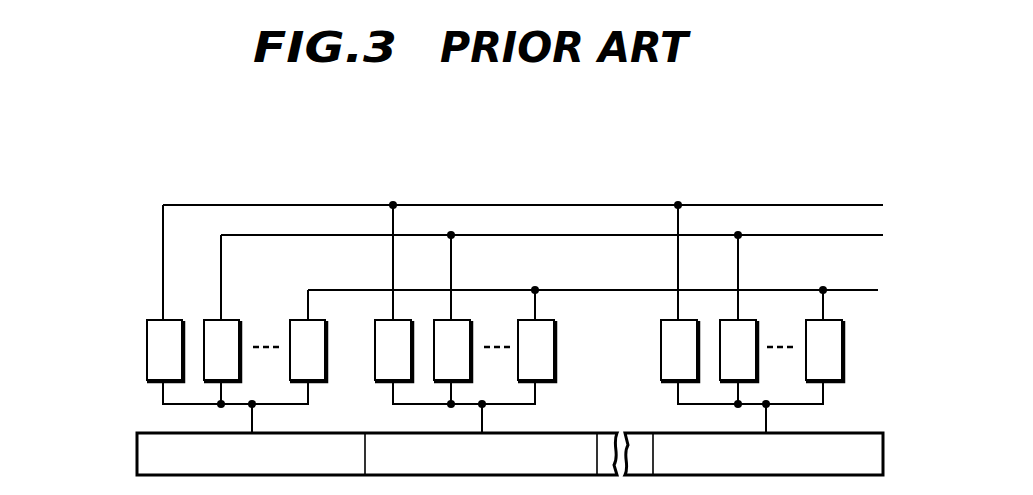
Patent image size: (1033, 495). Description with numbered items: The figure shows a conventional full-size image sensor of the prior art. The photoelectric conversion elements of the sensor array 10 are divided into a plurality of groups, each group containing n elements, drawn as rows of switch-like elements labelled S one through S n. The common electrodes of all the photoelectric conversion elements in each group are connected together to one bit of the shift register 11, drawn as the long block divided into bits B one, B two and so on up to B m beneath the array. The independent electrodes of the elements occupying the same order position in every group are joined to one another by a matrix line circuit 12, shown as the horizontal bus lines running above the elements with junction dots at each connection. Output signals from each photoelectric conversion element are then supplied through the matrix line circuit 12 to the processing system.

The sensor array 10 is at (138, 350).
The shift register 11 is at (130, 460).
The matrix line circuit 12 is at (280, 262).